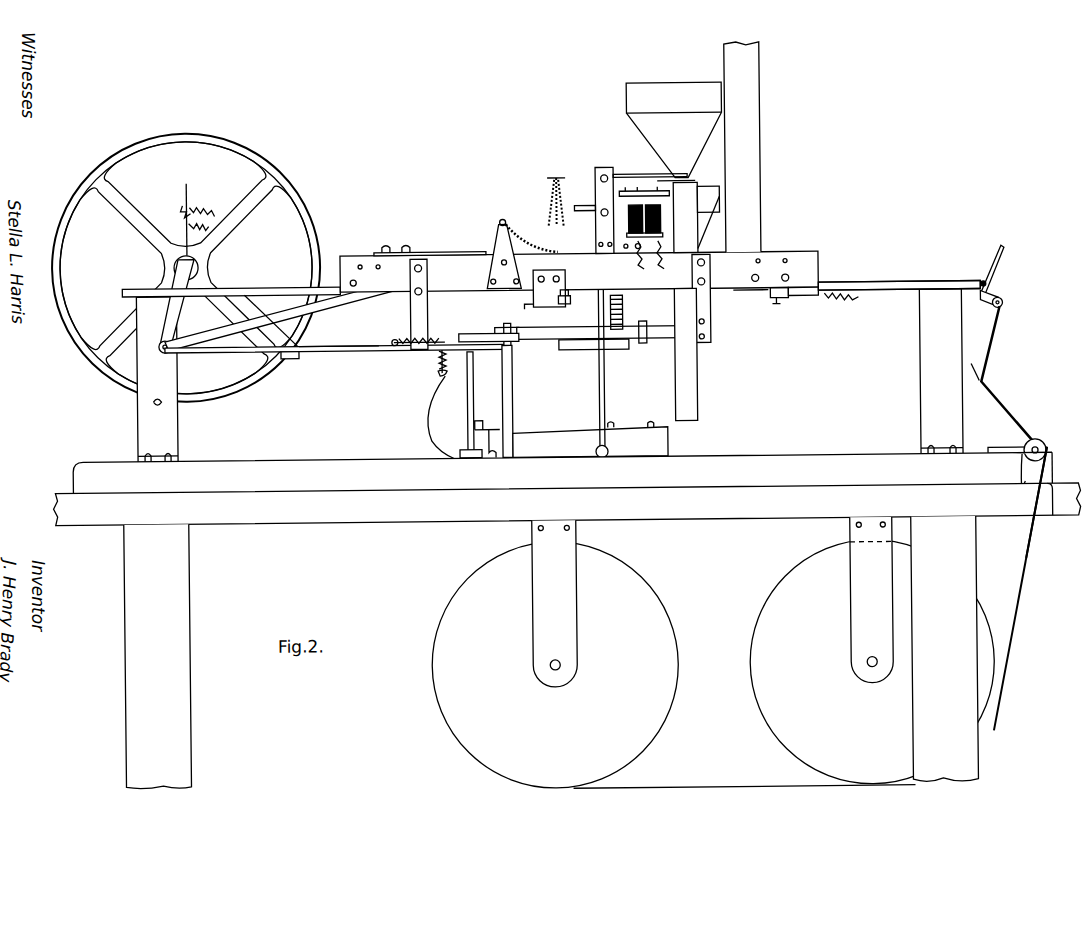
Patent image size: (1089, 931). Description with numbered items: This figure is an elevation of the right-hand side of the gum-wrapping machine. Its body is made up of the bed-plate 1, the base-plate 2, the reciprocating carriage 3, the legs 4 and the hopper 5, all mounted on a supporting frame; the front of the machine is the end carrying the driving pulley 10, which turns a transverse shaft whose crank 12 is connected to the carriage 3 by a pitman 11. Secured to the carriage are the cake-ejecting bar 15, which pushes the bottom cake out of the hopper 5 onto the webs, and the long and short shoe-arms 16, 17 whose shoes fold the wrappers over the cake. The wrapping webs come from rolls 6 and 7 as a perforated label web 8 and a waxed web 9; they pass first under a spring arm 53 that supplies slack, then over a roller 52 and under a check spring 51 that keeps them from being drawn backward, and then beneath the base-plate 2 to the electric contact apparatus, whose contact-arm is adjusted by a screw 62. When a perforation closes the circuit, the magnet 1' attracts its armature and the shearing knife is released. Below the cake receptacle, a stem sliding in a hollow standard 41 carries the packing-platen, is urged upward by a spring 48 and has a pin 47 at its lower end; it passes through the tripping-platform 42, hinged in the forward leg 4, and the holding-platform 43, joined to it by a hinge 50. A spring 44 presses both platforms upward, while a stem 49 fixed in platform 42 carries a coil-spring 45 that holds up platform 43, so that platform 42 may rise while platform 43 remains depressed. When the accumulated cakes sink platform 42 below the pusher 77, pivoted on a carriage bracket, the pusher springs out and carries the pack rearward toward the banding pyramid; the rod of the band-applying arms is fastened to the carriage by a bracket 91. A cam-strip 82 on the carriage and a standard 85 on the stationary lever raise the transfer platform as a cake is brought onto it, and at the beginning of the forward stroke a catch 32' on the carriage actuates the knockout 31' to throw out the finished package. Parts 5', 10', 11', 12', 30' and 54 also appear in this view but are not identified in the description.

The bed-plate 1 is at (568, 621).
The magnet 1' is at (662, 225).
The base-plate 2 is at (229, 290).
The carriage 3 is at (579, 271).
The legs 4 is at (549, 376).
The hopper 5 is at (742, 147).
The triangular bracket 5' is at (523, 252).
The roll 6 is at (673, 653).
The roll 7 is at (872, 650).
The label web 8 is at (1023, 513).
The waxed web 9 is at (1016, 574).
The pulley 10 is at (186, 267).
The hopper 10' is at (674, 131).
The pitman 11 is at (302, 311).
The upright plate 11' is at (626, 205).
The crank 12 is at (181, 306).
The chain 12' is at (545, 202).
The cake-ejecting bar 15 is at (824, 282).
The long shoe-arm 16 is at (448, 251).
The short shoe-arm 17 is at (378, 251).
The pawl rod and spring 30' is at (184, 220).
The knockout 31' is at (520, 390).
The catch 32' is at (572, 320).
The hollow standard 41 is at (467, 434).
The tripping-platform 42 is at (397, 350).
The holding-platform 43 is at (374, 350).
The spring 44 is at (430, 420).
The coil-spring 45 is at (438, 363).
The pin 47 is at (488, 413).
The spring 48 is at (560, 432).
The stem 49 is at (453, 381).
The hinge 50 is at (284, 357).
The check spring 51 is at (1000, 272).
The roller 52 is at (1004, 306).
The spring arm 53 is at (970, 366).
The pivot 54 is at (1048, 455).
The screw 62 is at (779, 307).
The pusher 77 is at (418, 333).
The cam-strip 82 is at (530, 306).
The standard 85 is at (549, 288).
The bracket 91 is at (713, 305).